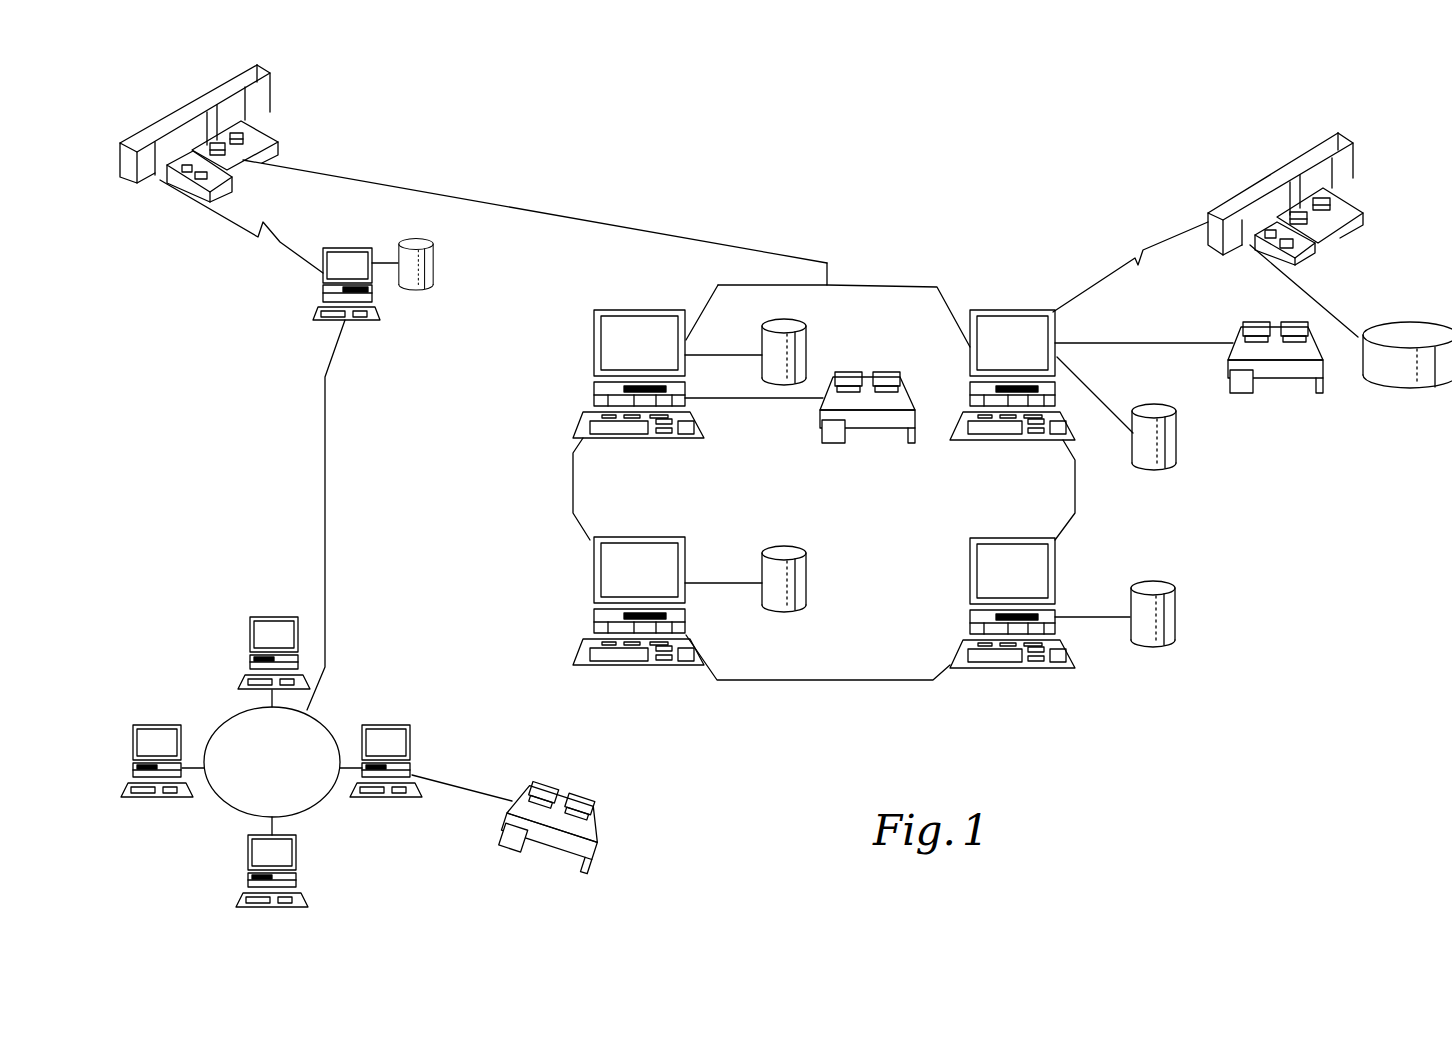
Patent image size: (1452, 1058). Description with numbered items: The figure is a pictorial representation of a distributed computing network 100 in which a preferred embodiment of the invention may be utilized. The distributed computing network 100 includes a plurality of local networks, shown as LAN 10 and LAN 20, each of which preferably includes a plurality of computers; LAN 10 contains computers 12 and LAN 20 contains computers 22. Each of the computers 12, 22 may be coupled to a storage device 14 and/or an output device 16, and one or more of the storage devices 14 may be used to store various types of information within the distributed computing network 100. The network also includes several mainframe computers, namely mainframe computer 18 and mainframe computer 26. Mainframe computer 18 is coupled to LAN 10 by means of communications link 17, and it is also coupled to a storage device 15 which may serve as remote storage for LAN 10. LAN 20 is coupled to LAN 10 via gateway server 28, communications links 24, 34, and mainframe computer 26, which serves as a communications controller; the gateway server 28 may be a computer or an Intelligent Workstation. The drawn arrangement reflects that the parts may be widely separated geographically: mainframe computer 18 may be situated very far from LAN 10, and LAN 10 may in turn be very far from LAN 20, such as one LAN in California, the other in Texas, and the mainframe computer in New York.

The distributed computing network 100 is at (866, 180).
The LAN 10 is at (843, 681).
The computers 12 is at (657, 308).
The storage device 14 is at (806, 335).
The storage device 15 is at (1427, 330).
The output device 16 is at (867, 385).
The communications link 17 is at (1172, 243).
The mainframe computer 18 is at (1280, 173).
The LAN 20 is at (226, 805).
The computers 22 is at (284, 617).
The communications link 24 is at (365, 182).
The mainframe computer 26 is at (267, 72).
The gateway server 28 is at (347, 247).
The communications link 34 is at (275, 250).